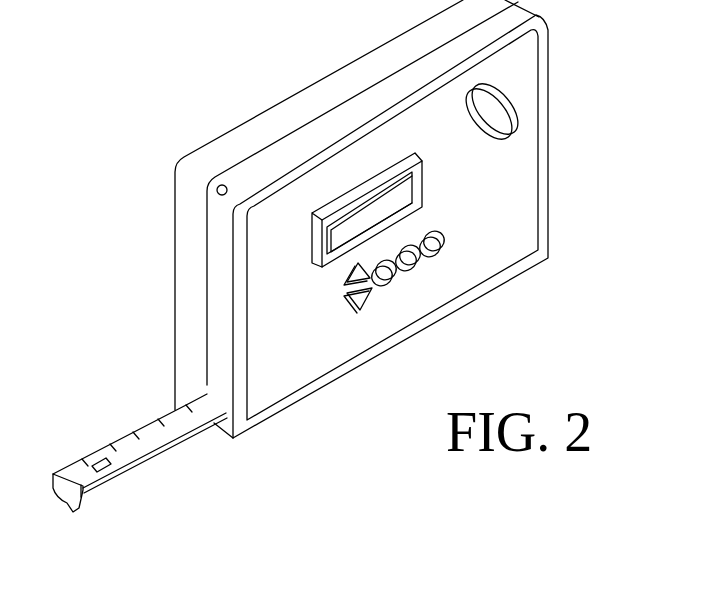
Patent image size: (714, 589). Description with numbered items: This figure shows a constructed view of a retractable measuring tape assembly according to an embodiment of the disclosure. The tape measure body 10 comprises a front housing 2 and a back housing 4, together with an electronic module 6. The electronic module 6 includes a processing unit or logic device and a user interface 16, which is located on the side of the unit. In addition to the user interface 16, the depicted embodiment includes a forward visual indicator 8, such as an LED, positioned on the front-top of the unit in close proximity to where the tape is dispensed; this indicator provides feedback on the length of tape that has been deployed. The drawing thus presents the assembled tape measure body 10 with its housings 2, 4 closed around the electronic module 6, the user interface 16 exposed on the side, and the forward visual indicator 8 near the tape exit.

The front housing 2 is at (326, 138).
The back housing 4 is at (238, 136).
The electronic module 6 is at (442, 107).
The forward visual indicator 8 is at (218, 186).
The tape measure body 10 is at (334, 256).
The user interface 16 is at (477, 204).